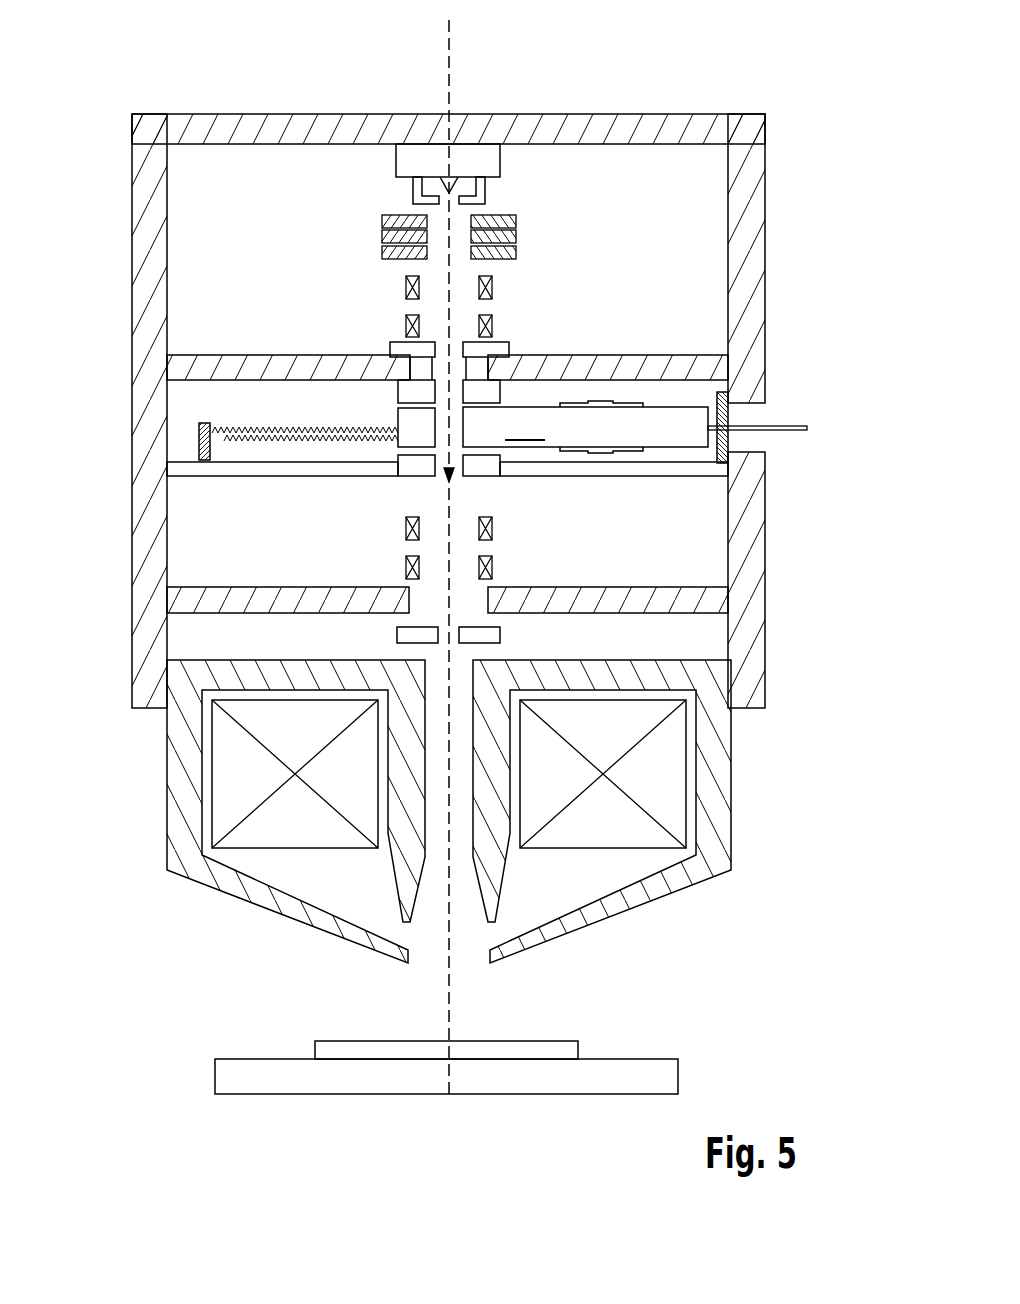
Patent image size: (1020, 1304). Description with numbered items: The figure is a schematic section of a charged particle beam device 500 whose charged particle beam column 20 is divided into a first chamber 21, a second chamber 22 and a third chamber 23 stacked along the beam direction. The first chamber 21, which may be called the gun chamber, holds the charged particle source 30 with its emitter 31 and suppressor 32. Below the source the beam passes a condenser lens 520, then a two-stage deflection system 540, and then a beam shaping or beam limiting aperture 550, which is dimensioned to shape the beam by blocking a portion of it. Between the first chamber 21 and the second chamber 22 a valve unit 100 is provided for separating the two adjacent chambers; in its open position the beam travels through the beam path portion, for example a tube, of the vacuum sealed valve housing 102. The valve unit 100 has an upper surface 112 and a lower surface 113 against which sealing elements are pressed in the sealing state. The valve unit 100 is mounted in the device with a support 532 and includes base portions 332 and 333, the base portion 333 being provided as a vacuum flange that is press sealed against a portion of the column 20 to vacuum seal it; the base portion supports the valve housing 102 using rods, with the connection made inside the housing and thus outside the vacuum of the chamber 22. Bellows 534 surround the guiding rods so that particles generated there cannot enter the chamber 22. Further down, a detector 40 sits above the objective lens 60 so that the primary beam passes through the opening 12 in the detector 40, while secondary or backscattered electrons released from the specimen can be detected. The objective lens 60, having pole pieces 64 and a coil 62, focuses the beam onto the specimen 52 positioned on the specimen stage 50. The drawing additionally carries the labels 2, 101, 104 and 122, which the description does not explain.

The charged particle beam device 500 is at (766, 72).
The optical axis 2 is at (447, 72).
The charged particle beam column 20 is at (144, 268).
The first chamber 21 is at (192, 186).
The second chamber 22 is at (182, 402).
The third chamber 23 is at (182, 646).
The charged particle source 30 is at (470, 202).
The emitter 31 is at (445, 193).
The suppressor 32 is at (480, 190).
The condenser lens 520 is at (374, 213).
The two-stage deflection system 540 is at (513, 337).
The beam shaping or beam limiting aperture 550 is at (510, 348).
The upper surface 112 is at (400, 393).
The lower surface 113 is at (398, 467).
The bellows 534 is at (290, 425).
The base portion 332 is at (201, 458).
The support 532 is at (282, 470).
The valve unit 100 is at (666, 426).
The aperture opening 101 is at (585, 378).
The valve housing 102 is at (665, 404).
The piezo actuators 122 is at (603, 407).
The base portion 333 is at (727, 393).
The actuating rod 104 is at (780, 425).
The detector 40 is at (397, 634).
The opening 12 is at (458, 632).
The objective lens 60 is at (475, 818).
The coil 62 is at (675, 783).
The pole pieces 64 is at (720, 838).
The specimen stage 50 is at (633, 1070).
The specimen 52 is at (348, 1040).